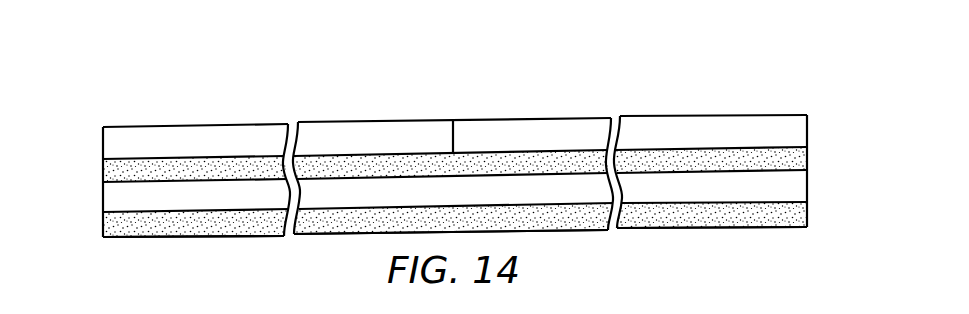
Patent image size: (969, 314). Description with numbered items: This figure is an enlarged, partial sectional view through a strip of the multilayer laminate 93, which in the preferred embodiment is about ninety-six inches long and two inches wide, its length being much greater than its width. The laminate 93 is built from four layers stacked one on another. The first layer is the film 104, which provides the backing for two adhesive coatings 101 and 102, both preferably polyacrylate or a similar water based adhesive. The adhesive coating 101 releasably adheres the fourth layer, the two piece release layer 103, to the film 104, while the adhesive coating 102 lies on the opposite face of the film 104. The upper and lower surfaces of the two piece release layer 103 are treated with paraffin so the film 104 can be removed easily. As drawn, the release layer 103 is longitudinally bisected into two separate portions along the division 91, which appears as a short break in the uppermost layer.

The multilayer laminate 93 is at (363, 60).
The division 91 is at (453, 131).
The two piece release layer 103 is at (103, 142).
The adhesive coating 101 is at (103, 168).
The film 104 is at (103, 197).
The adhesive coating 102 is at (103, 228).